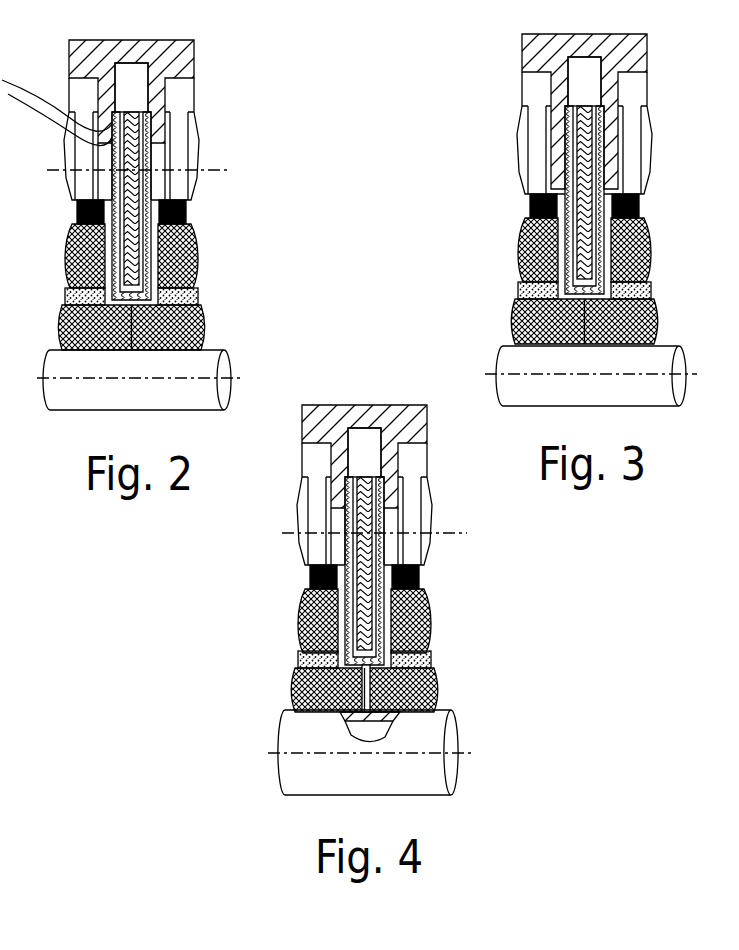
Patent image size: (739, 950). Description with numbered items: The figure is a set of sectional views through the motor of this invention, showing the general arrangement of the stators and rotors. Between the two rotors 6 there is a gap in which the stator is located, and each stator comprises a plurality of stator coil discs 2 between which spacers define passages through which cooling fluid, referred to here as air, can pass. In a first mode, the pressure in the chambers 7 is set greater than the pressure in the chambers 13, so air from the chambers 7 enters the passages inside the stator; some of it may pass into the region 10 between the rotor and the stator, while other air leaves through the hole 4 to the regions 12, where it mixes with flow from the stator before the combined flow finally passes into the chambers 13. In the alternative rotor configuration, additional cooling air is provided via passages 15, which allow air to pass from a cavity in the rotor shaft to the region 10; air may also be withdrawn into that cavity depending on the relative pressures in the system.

In FIG. 2, the stator coil discs 2 is at (158, 270).
In FIG. 3, the stator coil discs 2 is at (584, 269).
In FIG. 4, the stator coil discs 2 is at (364, 638).
In FIG. 2, the hole 4 is at (83, 157).
In FIG. 3, the hole 4 is at (584, 114).
In FIG. 4, the hole 4 is at (364, 485).
In FIG. 2, the rotors 6 is at (193, 238).
In FIG. 4, the rotors 6 is at (364, 621).
In FIG. 2, the chambers 7 is at (137, 73).
In FIG. 3, the chambers 7 is at (584, 81).
In FIG. 4, the chambers 7 is at (364, 452).
In FIG. 2, the region 10 is at (143, 298).
In FIG. 3, the region 10 is at (631, 207).
In FIG. 4, the region 10 is at (409, 571).
In FIG. 3, the regions 12 is at (542, 253).
In FIG. 2, the chambers 13 is at (82, 98).
In FIG. 3, the chambers 13 is at (584, 150).
In FIG. 4, the chambers 13 is at (364, 521).
In FIG. 4, the passages 15 is at (410, 652).